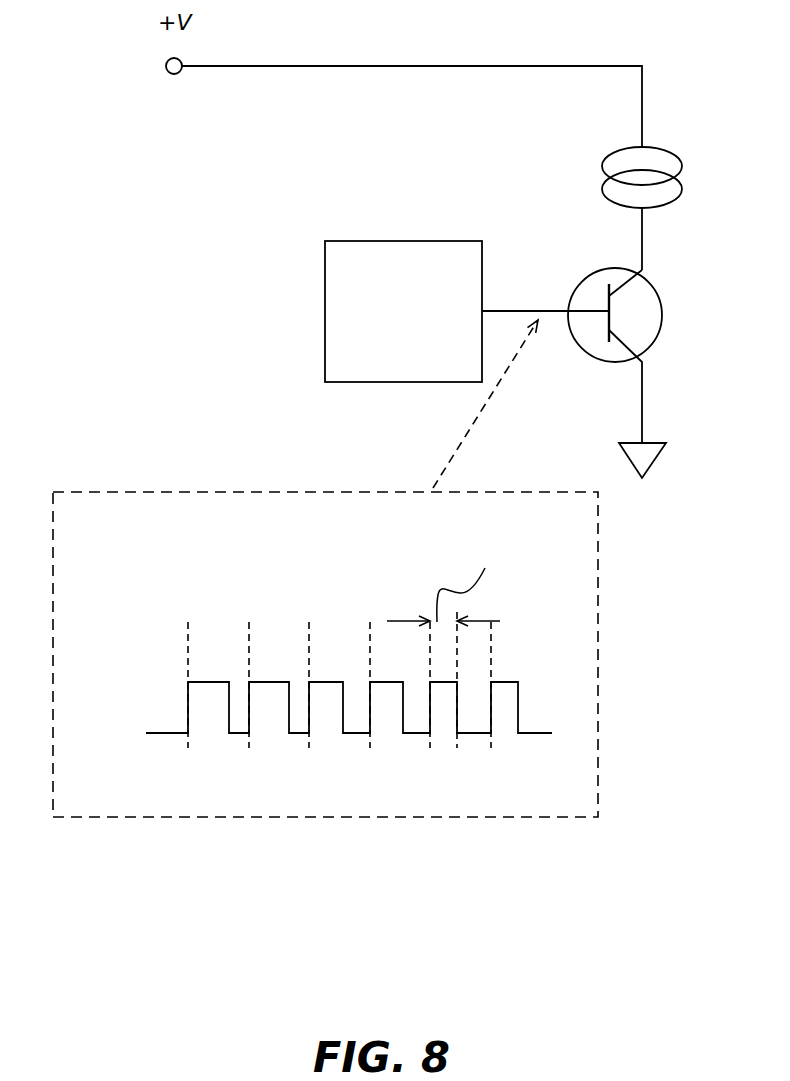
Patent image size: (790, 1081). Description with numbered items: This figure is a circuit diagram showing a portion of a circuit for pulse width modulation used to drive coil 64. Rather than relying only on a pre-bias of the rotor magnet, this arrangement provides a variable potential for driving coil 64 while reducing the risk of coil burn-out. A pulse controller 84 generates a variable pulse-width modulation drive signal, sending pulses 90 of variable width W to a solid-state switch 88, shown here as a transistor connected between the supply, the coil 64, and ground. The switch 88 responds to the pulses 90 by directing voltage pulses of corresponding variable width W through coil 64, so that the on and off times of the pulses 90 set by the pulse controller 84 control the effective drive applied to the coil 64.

The coil 64 is at (602, 167).
The pulse controller 84 is at (408, 322).
The solid-state switch 88 is at (663, 312).
The pulses 90 is at (267, 682).